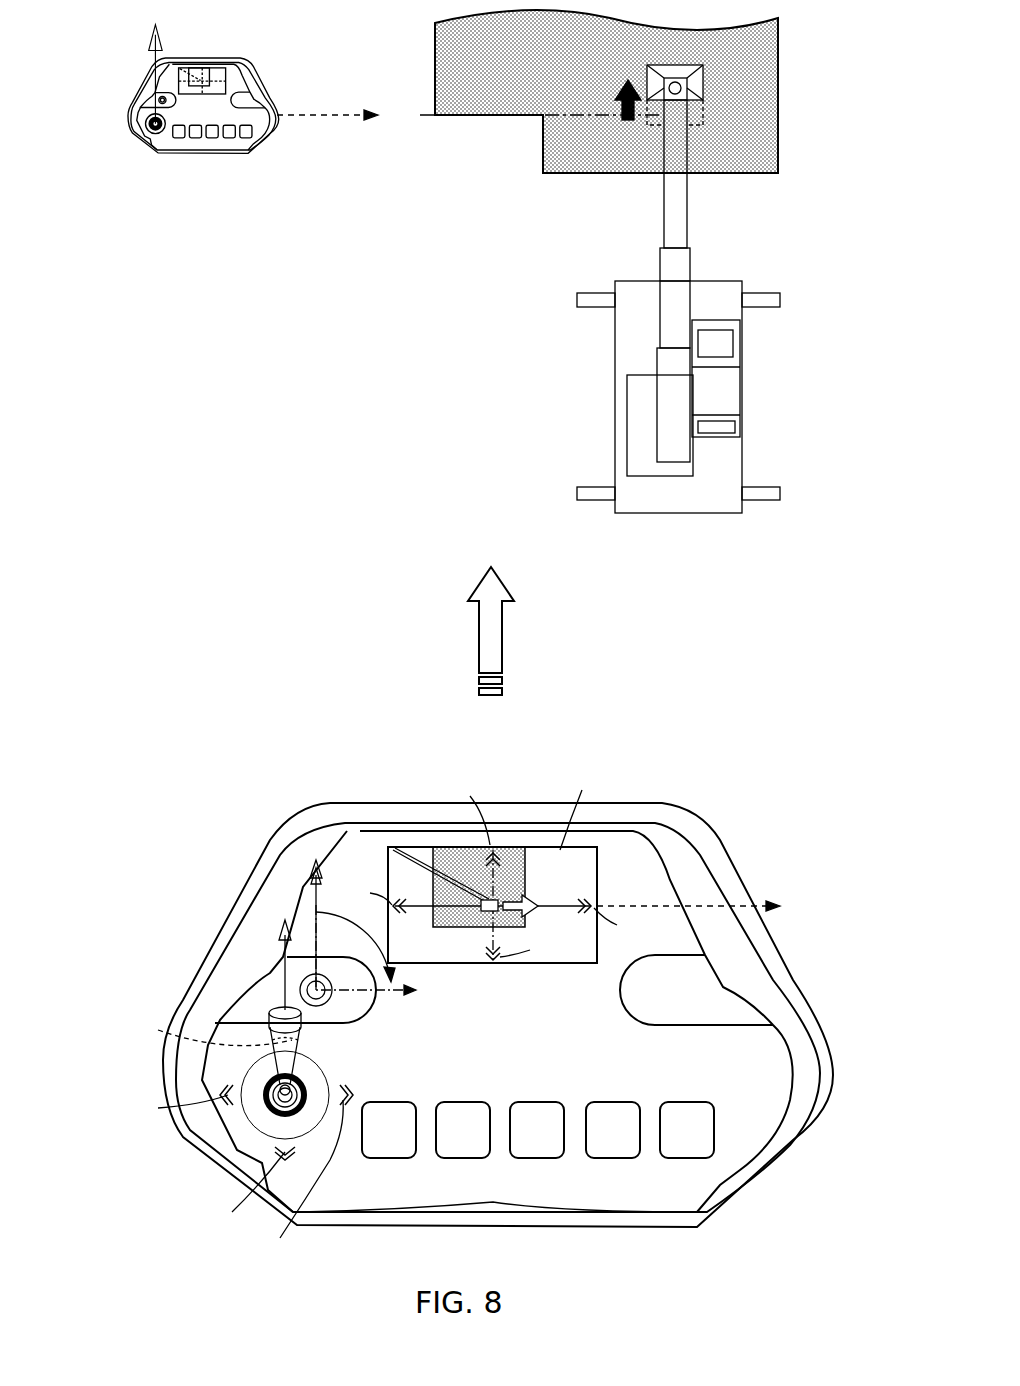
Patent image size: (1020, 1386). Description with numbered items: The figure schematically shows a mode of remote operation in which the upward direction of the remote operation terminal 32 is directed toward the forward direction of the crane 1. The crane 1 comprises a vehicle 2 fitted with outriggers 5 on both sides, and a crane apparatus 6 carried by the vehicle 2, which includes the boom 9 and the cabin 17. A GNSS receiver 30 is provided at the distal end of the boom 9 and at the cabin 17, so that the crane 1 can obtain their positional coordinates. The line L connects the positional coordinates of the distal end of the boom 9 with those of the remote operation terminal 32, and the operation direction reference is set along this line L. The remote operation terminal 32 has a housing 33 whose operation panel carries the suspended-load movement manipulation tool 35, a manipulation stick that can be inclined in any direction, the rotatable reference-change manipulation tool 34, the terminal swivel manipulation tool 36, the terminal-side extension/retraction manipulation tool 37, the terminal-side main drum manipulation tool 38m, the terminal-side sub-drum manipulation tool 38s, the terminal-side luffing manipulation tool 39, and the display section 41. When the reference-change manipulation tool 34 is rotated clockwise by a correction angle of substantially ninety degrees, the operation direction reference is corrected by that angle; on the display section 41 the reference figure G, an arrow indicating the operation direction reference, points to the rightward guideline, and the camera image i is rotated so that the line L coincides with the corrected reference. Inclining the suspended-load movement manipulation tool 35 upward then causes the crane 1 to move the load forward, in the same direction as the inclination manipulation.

The crane 1 is at (840, 138).
The vehicle 2 is at (597, 411).
The outriggers 5 is at (577, 300).
The crane apparatus 6 is at (714, 204).
The boom 9 is at (578, 218).
The cabin 17 is at (735, 388).
The GNSS receiver 30 is at (690, 88).
The remote operation terminal 32 is at (128, 117).
The housing 33 is at (302, 845).
The reference-change manipulation tool 34 is at (302, 988).
The suspended-load movement manipulation tool 35 is at (292, 1062).
The terminal swivel manipulation tool 36 is at (375, 1155).
The terminal-side extension/retraction manipulation tool 37 is at (450, 1155).
The terminal-side main drum manipulation tool 38m is at (523, 1155).
The terminal-side sub-drum manipulation tool 38s is at (600, 1155).
The terminal-side luffing manipulation tool 39 is at (670, 1155).
The display section 41 is at (493, 865).
The line L is at (437, 117).
The reference figure G is at (528, 903).
The image i is at (590, 855).